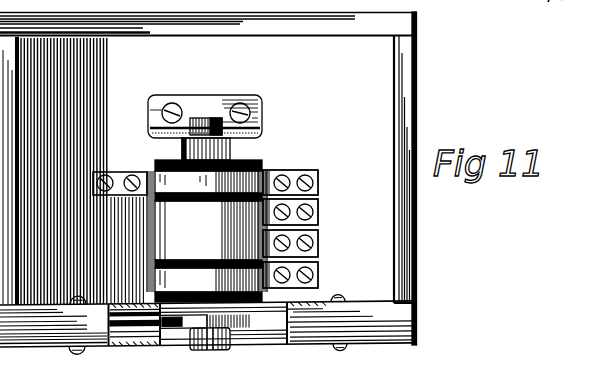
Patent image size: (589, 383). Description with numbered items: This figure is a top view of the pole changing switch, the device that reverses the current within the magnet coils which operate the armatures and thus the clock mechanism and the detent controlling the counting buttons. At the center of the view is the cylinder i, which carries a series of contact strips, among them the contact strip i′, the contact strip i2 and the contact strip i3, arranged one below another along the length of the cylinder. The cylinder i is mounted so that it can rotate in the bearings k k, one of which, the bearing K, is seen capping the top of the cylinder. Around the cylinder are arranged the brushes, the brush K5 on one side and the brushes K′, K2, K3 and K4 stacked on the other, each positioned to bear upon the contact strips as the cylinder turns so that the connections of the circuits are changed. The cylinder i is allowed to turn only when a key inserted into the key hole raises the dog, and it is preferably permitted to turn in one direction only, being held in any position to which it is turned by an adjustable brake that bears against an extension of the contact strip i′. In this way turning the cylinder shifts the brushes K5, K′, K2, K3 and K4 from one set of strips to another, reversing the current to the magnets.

The bearing K is at (200, 99).
The brush K5 is at (103, 171).
The brush K′ is at (320, 192).
The brush K2 is at (322, 216).
The brush K3 is at (322, 247).
The brush K4 is at (320, 281).
The cylinder i is at (259, 164).
The contact strip i′ is at (262, 167).
The contact strip i2 is at (208, 234).
The contact strip i3 is at (206, 279).